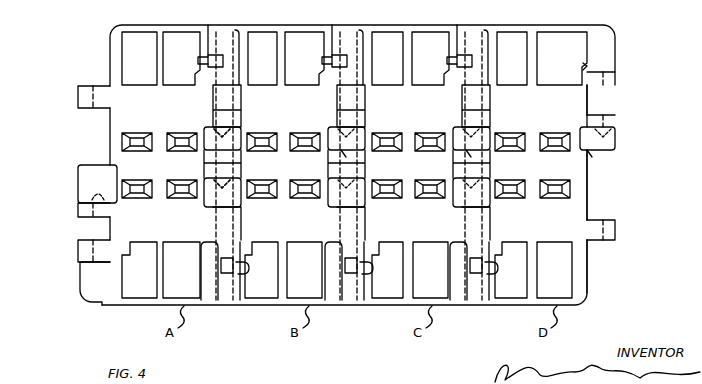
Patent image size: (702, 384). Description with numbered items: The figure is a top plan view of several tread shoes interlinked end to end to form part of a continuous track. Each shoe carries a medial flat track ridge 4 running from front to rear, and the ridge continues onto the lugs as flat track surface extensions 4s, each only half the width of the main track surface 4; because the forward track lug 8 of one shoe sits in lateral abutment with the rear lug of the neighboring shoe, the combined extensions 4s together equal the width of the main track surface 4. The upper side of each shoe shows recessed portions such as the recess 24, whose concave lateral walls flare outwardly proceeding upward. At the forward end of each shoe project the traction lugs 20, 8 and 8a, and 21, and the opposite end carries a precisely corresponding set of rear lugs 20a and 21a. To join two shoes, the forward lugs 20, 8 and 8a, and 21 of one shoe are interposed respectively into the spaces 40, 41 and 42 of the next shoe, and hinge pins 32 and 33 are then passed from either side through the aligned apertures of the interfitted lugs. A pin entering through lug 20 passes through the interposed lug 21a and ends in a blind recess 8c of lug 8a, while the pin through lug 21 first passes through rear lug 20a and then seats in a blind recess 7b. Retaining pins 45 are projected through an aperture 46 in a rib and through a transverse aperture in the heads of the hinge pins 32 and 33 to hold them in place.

The medial flat track ridge 4 is at (167, 173).
The flat track surface extensions 4s is at (350, 160).
The blind recess 7b is at (210, 127).
The forward track lug 8 is at (78, 172).
The forward lug 8a is at (78, 212).
The blind recess 8c is at (215, 200).
The forward traction lug 20 is at (78, 250).
The rear traction lug 20a is at (615, 82).
The forward traction lug 21 is at (78, 97).
The rear traction lug 21a is at (616, 239).
The recessed portion 24 is at (240, 128).
The hinge pin 32 is at (224, 55).
The hinge pin 33 is at (228, 275).
The space 40 is at (611, 261).
The space 41 is at (612, 191).
The space 42 is at (614, 104).
The retaining pin 45 is at (200, 56).
The aperture 46 is at (108, 266).